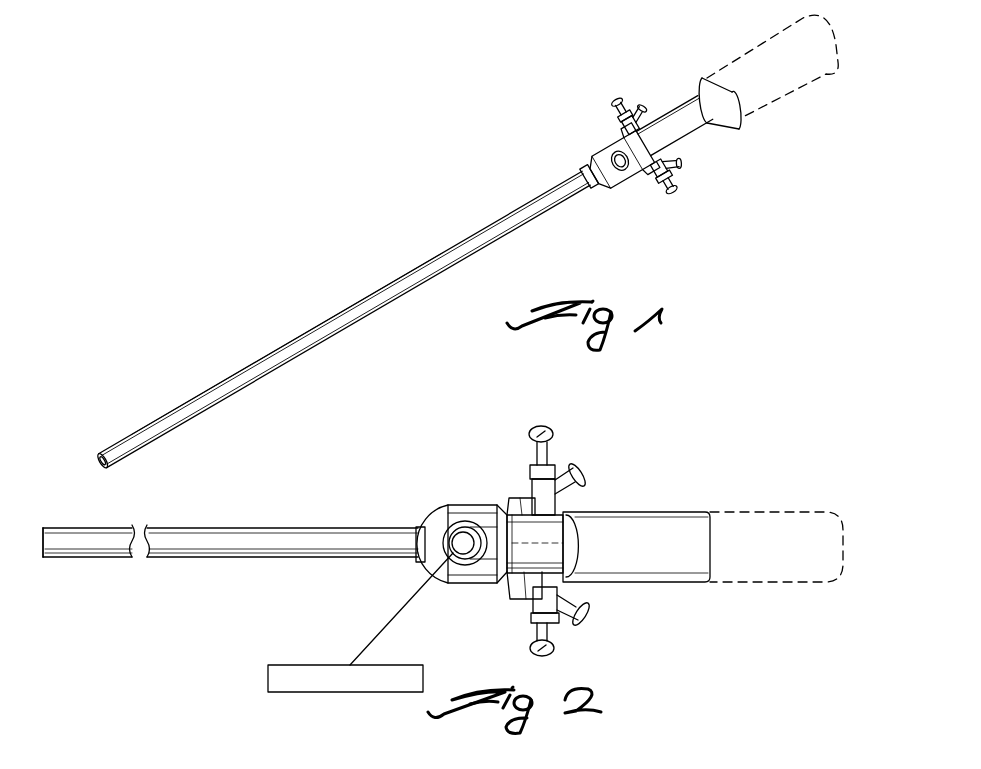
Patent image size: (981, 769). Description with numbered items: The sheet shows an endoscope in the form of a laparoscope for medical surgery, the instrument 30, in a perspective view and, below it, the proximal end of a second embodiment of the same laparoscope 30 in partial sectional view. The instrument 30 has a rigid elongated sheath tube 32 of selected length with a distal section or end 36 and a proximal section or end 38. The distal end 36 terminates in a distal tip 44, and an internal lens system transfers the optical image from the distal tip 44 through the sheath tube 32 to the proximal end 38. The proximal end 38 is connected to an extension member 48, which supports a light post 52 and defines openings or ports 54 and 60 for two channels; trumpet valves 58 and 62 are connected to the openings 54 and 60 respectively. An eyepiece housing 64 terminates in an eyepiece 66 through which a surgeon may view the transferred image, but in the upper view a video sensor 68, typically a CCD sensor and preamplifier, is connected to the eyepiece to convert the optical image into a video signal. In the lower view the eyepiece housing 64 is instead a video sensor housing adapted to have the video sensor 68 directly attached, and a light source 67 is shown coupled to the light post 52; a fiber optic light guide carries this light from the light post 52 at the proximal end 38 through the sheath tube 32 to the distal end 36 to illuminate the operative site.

In FIG. 1, the instrument 30 is at (525, 184).
In FIG. 2, the instrument 30 is at (266, 506).
In FIG. 1, the rigid elongated sheath tube 32 is at (382, 312).
In FIG. 2, the rigid elongated sheath tube 32 is at (176, 564).
In FIG. 1, the distal section or end 36 is at (197, 395).
In FIG. 1, the proximal section or end 38 is at (564, 187).
In FIG. 2, the proximal section or end 38 is at (348, 527).
In FIG. 1, the distal tip 44 is at (96, 459).
In FIG. 2, the distal tip 44 is at (43, 547).
In FIG. 1, the extension member 48 is at (614, 186).
In FIG. 2, the extension member 48 is at (465, 584).
In FIG. 1, the light post 52 is at (611, 141).
In FIG. 2, the light post 52 is at (452, 521).
In FIG. 1, the opening 54 is at (645, 170).
In FIG. 2, the opening 54 is at (510, 591).
In FIG. 1, the trumpet valve 58 is at (678, 166).
In FIG. 2, the trumpet valve 58 is at (579, 624).
In FIG. 1, the opening 60 is at (621, 138).
In FIG. 2, the opening 60 is at (510, 498).
In FIG. 1, the trumpet valve 62 is at (636, 110).
In FIG. 2, the trumpet valve 62 is at (557, 470).
In FIG. 1, the eyepiece housing 64 is at (694, 143).
In FIG. 2, the eyepiece housing 64 is at (668, 579).
In FIG. 1, the eyepiece 66 is at (734, 129).
In FIG. 2, the light source 67 is at (267, 678).
In FIG. 1, the video sensor 68 is at (743, 56).
In FIG. 2, the video sensor 68 is at (758, 510).